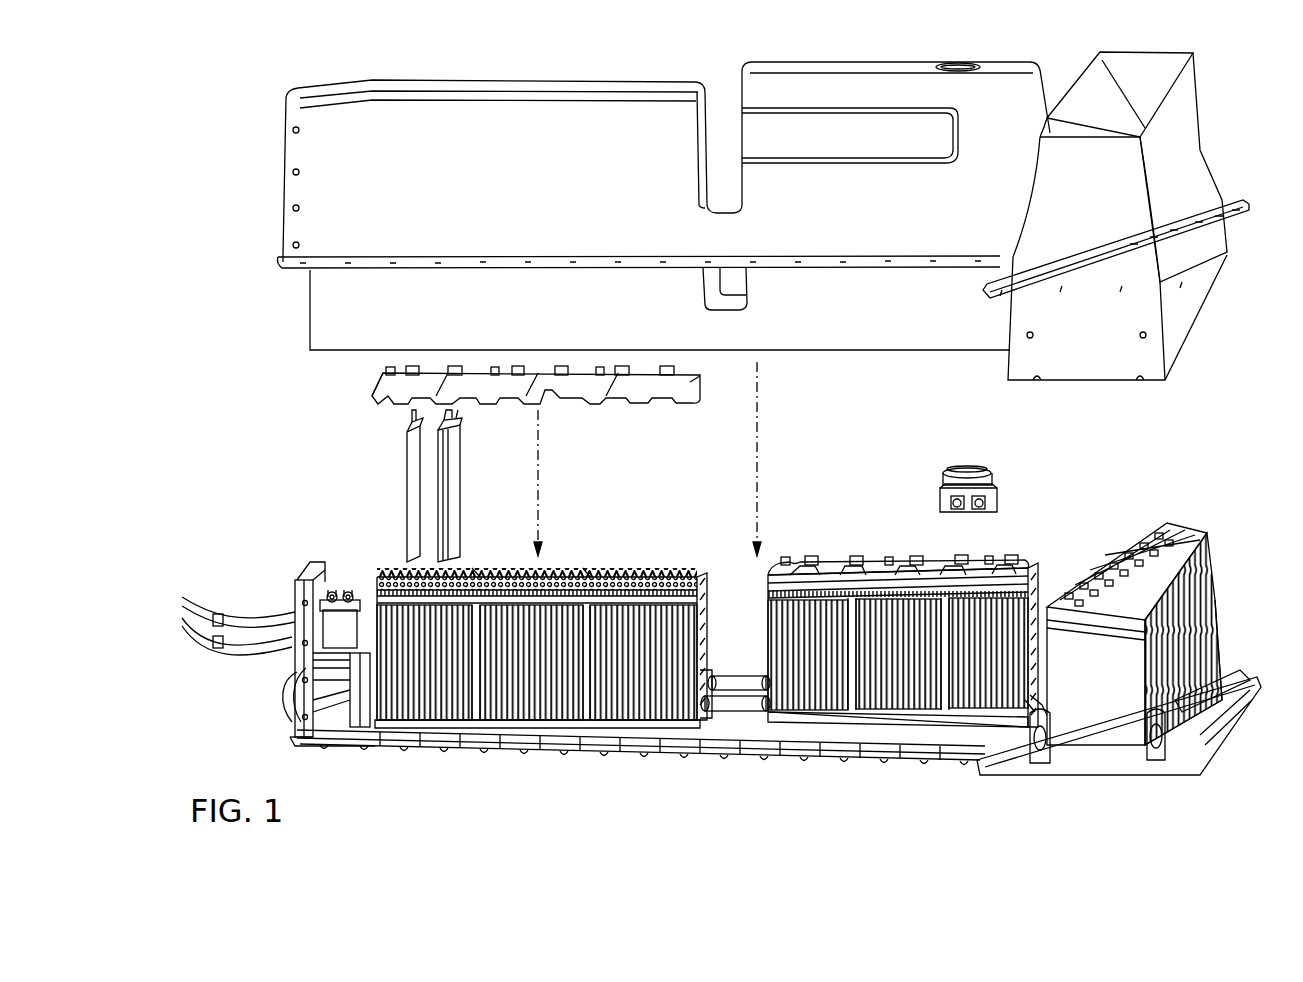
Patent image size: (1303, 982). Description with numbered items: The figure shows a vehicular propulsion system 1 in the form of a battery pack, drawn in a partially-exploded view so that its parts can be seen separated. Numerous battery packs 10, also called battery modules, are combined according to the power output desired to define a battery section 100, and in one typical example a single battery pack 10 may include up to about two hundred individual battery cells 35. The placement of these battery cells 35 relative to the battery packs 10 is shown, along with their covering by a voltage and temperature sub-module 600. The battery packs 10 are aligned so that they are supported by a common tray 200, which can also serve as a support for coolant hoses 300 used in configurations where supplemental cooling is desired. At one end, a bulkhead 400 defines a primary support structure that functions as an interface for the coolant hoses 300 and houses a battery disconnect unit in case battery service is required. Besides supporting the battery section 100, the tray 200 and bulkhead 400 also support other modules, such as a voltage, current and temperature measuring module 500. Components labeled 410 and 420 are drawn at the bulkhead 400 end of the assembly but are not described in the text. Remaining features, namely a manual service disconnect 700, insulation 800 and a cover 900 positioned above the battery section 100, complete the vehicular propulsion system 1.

The vehicular propulsion system 1 is at (213, 113).
The battery pack 10 is at (652, 707).
The battery cell 35 is at (407, 497).
The battery section 100 is at (547, 708).
The tray 200 is at (960, 741).
The coolant hose 300 is at (755, 690).
The bulkhead 400 is at (297, 738).
The coolant hoses 410 is at (284, 694).
The relay 420 is at (341, 598).
The voltage, current and temperature measuring module 500 is at (371, 664).
The voltage and temperature sub-module 600 is at (375, 389).
The manual service disconnect 700 is at (977, 470).
The insulation 800 is at (310, 313).
The cover 900 is at (285, 193).